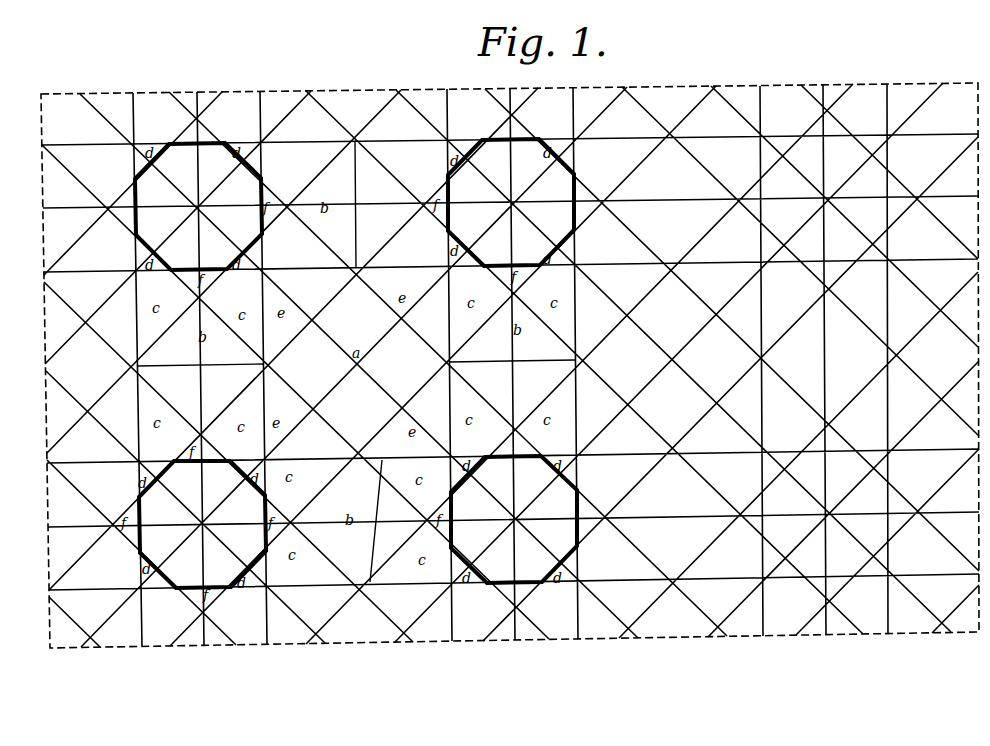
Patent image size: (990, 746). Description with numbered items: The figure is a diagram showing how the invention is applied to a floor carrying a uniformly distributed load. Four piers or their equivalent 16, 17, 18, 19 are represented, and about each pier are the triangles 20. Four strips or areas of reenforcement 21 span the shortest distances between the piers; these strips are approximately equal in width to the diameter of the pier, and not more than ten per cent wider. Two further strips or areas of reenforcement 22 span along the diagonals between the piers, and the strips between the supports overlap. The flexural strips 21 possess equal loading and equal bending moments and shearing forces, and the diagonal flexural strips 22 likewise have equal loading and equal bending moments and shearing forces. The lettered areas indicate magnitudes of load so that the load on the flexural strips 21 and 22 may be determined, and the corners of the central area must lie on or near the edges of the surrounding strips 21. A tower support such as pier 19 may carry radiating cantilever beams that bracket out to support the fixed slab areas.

The pier 16 is at (155, 195).
The pier 17 is at (157, 496).
The pier 18 is at (498, 158).
The pier 19 is at (548, 502).
The triangles 20 is at (137, 158).
The strips or areas of reenforcement 21 is at (480, 357).
The diagonal flexural strips 22 is at (297, 388).